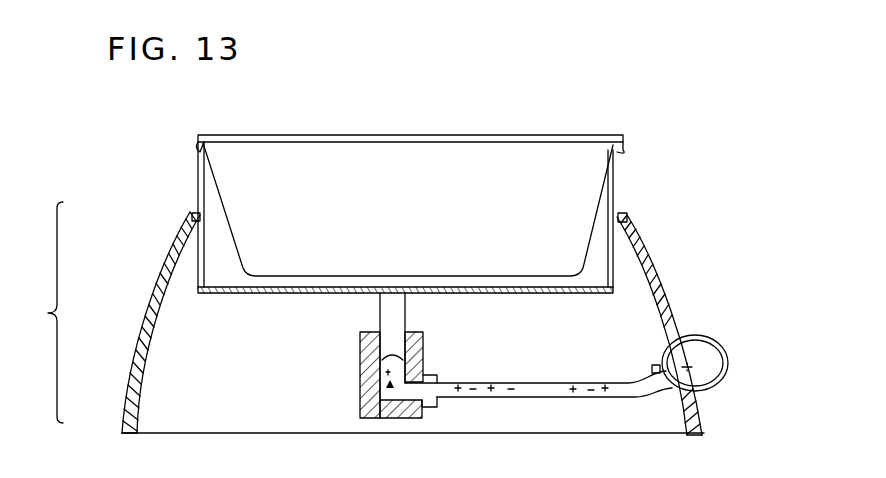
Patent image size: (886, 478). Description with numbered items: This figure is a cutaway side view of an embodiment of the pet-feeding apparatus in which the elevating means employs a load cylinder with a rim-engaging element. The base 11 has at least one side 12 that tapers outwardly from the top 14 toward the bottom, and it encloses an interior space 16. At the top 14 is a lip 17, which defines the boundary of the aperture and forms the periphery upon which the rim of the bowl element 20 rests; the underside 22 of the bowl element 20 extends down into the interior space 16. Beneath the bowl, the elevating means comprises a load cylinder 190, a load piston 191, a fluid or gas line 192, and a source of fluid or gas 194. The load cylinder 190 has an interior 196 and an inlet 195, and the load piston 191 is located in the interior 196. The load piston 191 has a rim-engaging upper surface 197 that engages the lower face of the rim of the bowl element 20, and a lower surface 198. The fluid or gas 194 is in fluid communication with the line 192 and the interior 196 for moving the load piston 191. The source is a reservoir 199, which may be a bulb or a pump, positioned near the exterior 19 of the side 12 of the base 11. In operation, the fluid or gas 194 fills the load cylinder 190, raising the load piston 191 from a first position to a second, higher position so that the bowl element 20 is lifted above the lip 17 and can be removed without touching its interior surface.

The base 11 is at (42, 312).
The side 12 is at (700, 417).
The top 14 is at (178, 213).
The interior space 16 is at (220, 393).
The lip 17 is at (640, 200).
The exterior 19 is at (694, 322).
The bowl element 20 is at (633, 125).
The underside 22 is at (400, 280).
The load cylinder 190 is at (418, 352).
The load piston 191 is at (403, 315).
The fluid or gas line 192 is at (525, 387).
The fluid or gas 194 is at (498, 398).
The inlet 195 is at (432, 378).
The interior 196 is at (363, 405).
The rim-engaging upper surface 197 is at (197, 144).
The lower surface 198 is at (368, 355).
The reservoir 199 is at (700, 352).